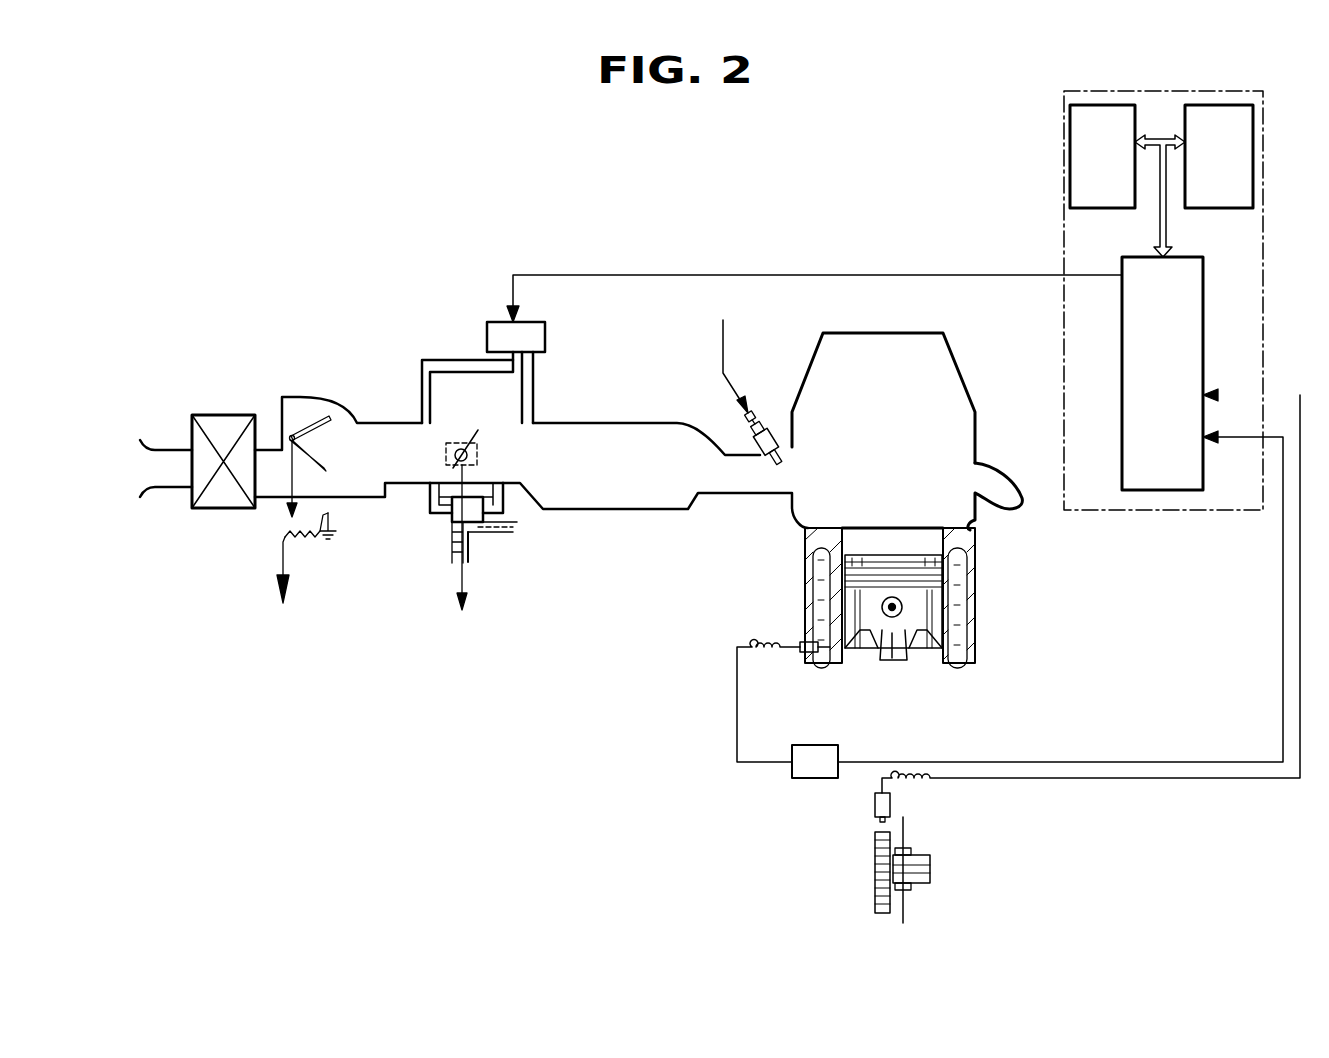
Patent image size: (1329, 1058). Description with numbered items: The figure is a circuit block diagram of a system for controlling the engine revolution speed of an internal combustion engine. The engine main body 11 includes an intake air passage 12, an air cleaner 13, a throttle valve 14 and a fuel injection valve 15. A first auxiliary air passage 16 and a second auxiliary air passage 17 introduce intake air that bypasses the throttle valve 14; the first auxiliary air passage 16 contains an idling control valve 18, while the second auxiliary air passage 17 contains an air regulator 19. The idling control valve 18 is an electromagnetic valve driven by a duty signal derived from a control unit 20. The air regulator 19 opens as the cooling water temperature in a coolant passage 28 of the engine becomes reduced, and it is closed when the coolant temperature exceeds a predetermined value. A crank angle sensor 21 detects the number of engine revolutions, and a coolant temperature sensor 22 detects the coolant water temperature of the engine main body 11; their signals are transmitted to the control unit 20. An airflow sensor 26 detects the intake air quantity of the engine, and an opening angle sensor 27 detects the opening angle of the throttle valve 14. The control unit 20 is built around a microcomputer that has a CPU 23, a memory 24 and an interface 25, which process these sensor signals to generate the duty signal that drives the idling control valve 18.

The engine main body 11 is at (953, 353).
The intake air passage 12 is at (630, 493).
The air cleaner 13 is at (222, 415).
The throttle valve 14 is at (440, 490).
The fuel injection valve 15 is at (778, 440).
The first auxiliary air passage 16 is at (455, 360).
The second auxiliary air passage 17 is at (435, 512).
The idling control valve 18 is at (546, 335).
The air regulator 19 is at (475, 538).
The control unit 20 is at (885, 277).
The crank angle sensor 21 is at (873, 807).
The coolant temperature sensor 22 is at (827, 642).
The CPU 23 is at (1108, 104).
The memory 24 is at (1213, 104).
The interface 25 is at (1122, 345).
The airflow sensor 26 is at (310, 397).
The opening angle sensor 27 is at (445, 450).
The coolant passage 28 is at (515, 535).